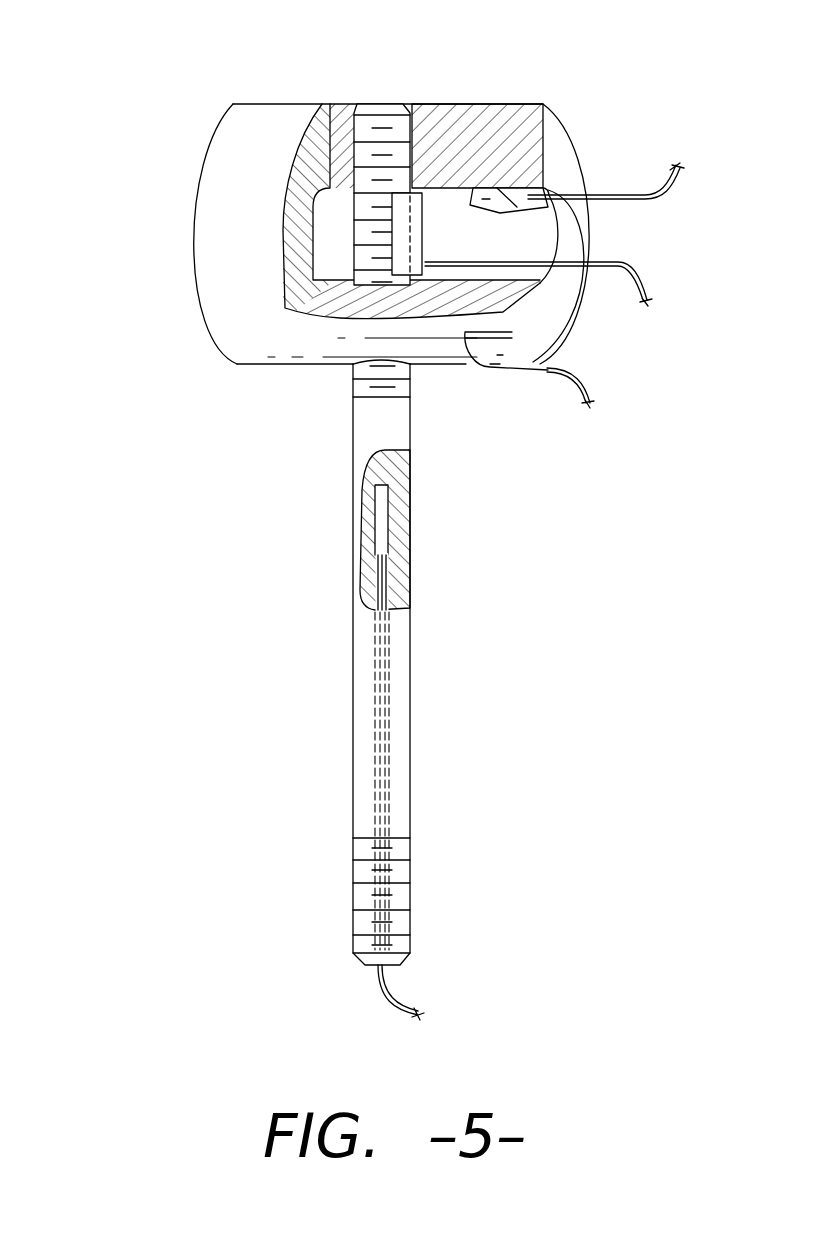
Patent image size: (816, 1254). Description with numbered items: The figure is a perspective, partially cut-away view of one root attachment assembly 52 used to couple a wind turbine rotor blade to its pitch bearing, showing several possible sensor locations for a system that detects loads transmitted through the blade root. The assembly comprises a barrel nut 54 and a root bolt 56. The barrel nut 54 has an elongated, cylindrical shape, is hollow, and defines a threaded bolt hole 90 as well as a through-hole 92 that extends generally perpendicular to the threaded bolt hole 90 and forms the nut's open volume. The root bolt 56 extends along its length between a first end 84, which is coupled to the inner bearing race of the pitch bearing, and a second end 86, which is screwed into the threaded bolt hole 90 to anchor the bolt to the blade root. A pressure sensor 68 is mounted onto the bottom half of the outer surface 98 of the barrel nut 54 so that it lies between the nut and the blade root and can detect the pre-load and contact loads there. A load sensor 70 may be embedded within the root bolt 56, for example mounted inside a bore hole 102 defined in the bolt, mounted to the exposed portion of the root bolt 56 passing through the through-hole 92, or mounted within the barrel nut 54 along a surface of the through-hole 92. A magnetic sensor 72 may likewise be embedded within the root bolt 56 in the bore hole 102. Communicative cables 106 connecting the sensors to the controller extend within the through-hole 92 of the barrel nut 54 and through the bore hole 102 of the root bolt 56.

The root attachment assembly 52 is at (406, 516).
The barrel nut 54 is at (429, 323).
The root bolt 56 is at (390, 690).
The pressure sensor 68 is at (512, 373).
The load sensor 70 is at (510, 323).
The magnetic sensor 72 is at (470, 188).
The first end 84 is at (405, 957).
The second end 86 is at (385, 104).
The threaded bolt hole 90 is at (350, 157).
The through-hole 92 is at (545, 235).
The outer surface 98 is at (218, 275).
The bore hole 102 is at (390, 733).
The communicative cables 106 is at (675, 165).